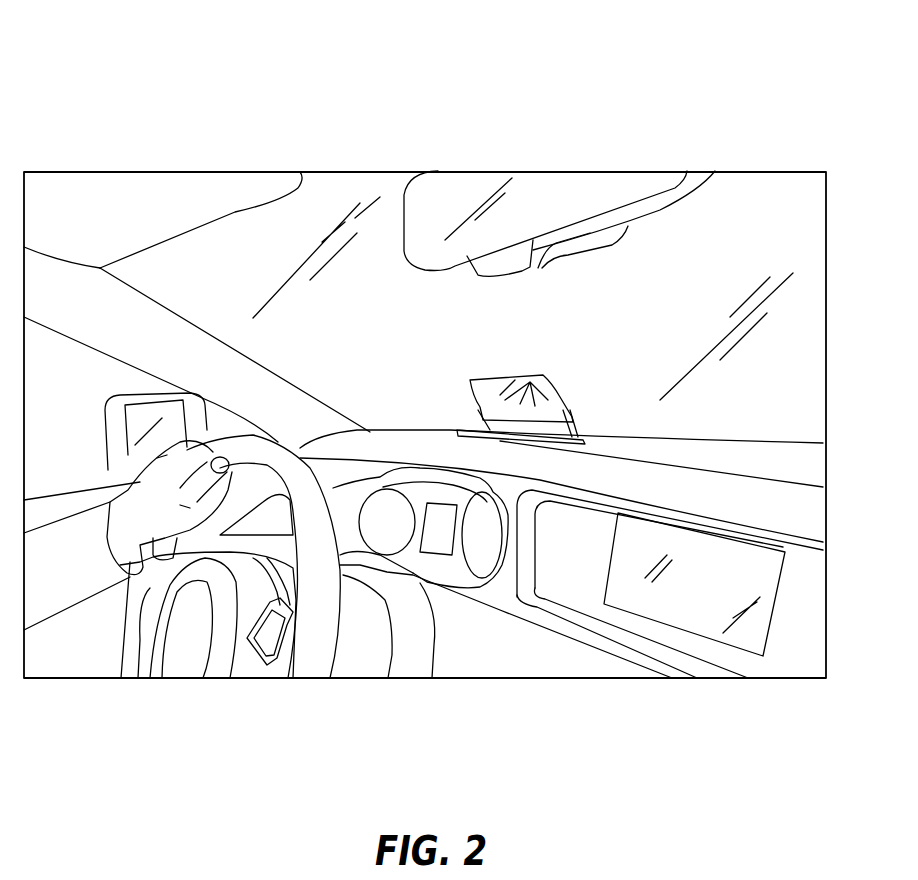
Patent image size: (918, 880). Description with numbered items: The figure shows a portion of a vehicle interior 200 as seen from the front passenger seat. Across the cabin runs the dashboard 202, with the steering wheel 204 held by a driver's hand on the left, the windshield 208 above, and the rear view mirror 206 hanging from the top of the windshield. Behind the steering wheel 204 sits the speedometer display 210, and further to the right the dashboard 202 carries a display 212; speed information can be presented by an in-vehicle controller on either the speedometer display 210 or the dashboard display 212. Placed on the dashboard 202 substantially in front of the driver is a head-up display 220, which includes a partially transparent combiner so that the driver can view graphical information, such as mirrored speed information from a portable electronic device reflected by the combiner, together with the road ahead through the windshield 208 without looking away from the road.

The vehicle interior 200 is at (156, 58).
The dashboard 202 is at (731, 446).
The steering wheel 204 is at (277, 455).
The rear view mirror 206 is at (655, 205).
The windshield 208 is at (253, 233).
The speedometer display 210 is at (477, 567).
The display 212 is at (690, 618).
The head-up display 220 is at (580, 384).